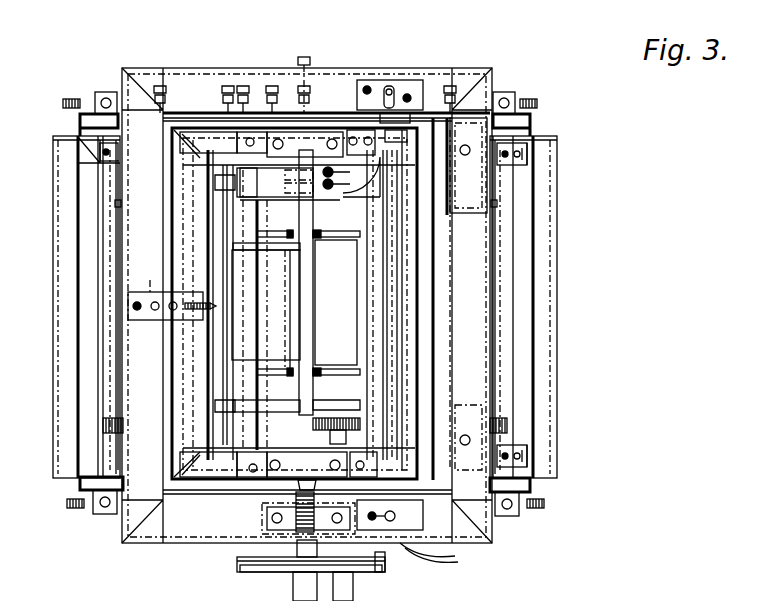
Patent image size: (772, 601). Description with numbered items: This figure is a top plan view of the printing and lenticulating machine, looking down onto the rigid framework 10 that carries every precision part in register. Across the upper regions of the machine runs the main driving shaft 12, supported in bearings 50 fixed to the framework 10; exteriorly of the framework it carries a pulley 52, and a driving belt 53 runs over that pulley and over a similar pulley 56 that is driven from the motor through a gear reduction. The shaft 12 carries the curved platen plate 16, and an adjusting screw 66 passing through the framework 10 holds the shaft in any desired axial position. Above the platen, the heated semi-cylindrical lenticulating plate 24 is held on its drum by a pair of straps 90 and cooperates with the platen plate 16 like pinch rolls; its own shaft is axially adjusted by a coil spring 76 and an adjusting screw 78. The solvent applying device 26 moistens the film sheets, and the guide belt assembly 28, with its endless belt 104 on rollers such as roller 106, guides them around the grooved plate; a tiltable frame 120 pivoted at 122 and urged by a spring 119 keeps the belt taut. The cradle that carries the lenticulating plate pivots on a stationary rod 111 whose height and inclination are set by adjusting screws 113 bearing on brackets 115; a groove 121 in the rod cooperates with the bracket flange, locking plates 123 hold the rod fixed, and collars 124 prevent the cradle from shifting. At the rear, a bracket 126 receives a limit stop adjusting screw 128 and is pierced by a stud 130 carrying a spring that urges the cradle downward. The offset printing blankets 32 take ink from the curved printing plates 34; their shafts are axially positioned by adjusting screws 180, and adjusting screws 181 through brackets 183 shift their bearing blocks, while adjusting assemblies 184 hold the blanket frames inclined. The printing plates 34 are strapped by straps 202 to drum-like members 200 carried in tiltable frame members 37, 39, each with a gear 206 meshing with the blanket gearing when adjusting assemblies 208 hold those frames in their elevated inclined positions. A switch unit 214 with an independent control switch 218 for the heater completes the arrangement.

The framework 10 is at (478, 369).
The main driving shaft 12 is at (300, 593).
The curved platen plate 16 is at (415, 270).
The lenticulating plate 24 is at (357, 321).
The solvent applying device 26 is at (307, 281).
The guide belt assembly 28 is at (308, 303).
The offset printing blankets 32 is at (369, 400).
The curved printing plates 34 is at (107, 351).
The frame member 37 is at (547, 277).
The frame member 39 is at (70, 260).
The bearings 50 is at (266, 521).
The pulley 52 is at (245, 572).
The driving belt 53 is at (237, 562).
The pulley 56 is at (383, 565).
The adjusting screw 66 is at (298, 90).
The coil spring 76 is at (296, 500).
The adjusting screw 78 is at (299, 58).
The straps 90 is at (357, 236).
The endless belt 104 is at (405, 137).
The roller 106 is at (303, 234).
The stationary rod 111 is at (400, 283).
The adjusting screws 113 is at (388, 86).
The bracket 115 is at (405, 100).
The spring 119 is at (200, 312).
The tiltable frame 120 is at (215, 393).
The groove 121 is at (420, 86).
The pivot 122 is at (208, 304).
The plates 123 is at (408, 120).
The collars 124 is at (308, 464).
The bracket 126 is at (150, 286).
The limit stop adjusting screw 128 is at (167, 290).
The stud 130 is at (137, 312).
The adjusting screw 180 is at (496, 78).
The adjusting screws 181 is at (518, 156).
The brackets 183 is at (510, 148).
The adjusting assemblies 184 is at (148, 172).
The drum-like members 200 is at (115, 205).
The straps 202 is at (110, 233).
The gear 206 is at (103, 425).
The adjusting assemblies 208 is at (63, 104).
The switch unit 214 is at (440, 538).
The control switch 218 is at (452, 560).